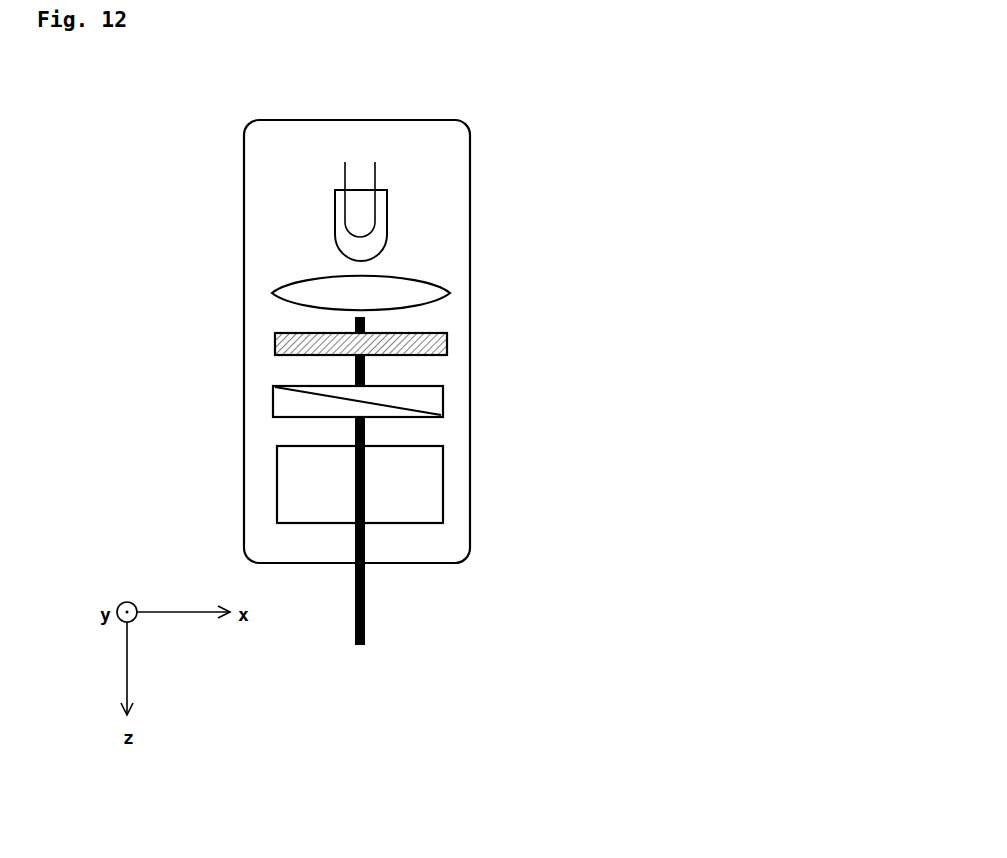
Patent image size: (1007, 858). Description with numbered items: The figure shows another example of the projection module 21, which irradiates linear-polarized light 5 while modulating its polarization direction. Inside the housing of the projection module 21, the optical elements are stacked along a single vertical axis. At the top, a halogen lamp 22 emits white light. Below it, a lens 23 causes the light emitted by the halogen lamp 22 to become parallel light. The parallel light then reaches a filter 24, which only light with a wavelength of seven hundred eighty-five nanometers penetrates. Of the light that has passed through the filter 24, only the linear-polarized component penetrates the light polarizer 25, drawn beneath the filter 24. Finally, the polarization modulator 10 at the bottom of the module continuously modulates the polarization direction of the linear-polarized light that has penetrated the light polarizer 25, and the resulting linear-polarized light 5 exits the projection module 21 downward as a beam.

The projection module 21 is at (285, 120).
The halogen lamp 22 is at (387, 222).
The lens 23 is at (420, 288).
The filter 24 is at (428, 334).
The light polarizer 25 is at (417, 400).
The polarization modulator 10 is at (421, 487).
The linear-polarized light 5 is at (365, 601).